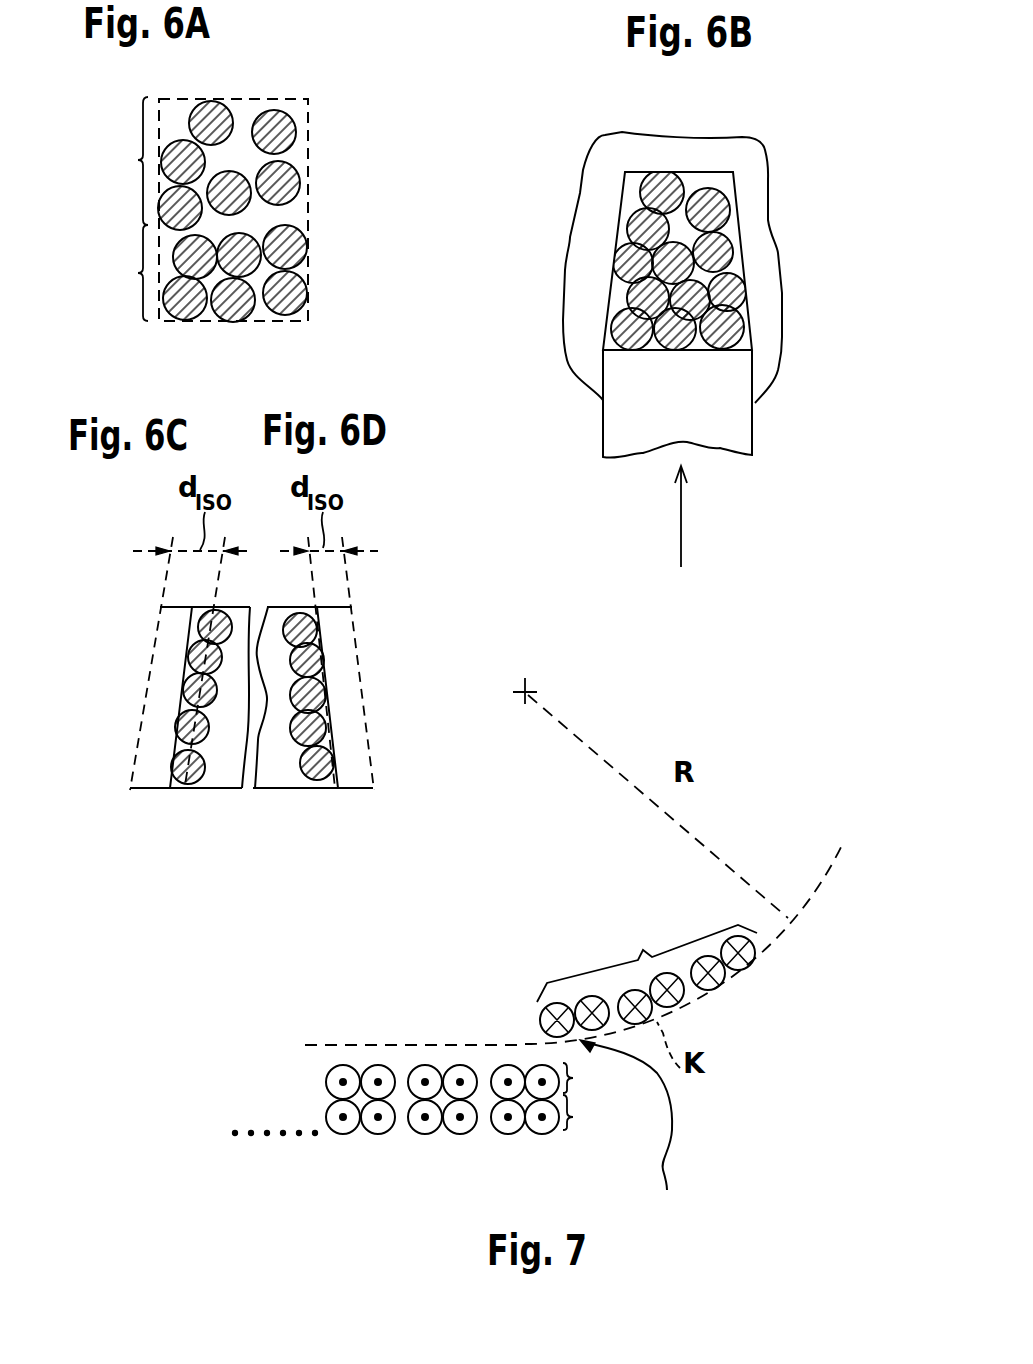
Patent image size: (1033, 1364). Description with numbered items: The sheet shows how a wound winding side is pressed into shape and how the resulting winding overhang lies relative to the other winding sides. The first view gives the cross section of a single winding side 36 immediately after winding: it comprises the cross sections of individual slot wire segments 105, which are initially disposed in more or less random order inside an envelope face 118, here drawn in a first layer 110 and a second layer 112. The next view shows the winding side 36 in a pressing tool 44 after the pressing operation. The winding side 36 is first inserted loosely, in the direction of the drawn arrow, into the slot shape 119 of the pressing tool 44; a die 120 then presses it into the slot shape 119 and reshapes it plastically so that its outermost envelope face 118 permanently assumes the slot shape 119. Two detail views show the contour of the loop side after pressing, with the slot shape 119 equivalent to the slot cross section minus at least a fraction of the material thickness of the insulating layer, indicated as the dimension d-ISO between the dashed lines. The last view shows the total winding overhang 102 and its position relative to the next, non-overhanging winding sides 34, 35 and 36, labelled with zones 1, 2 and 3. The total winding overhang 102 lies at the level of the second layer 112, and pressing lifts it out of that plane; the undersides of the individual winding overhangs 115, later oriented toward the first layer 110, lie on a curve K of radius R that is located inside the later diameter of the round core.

In FIG. 6A, the winding side 36 is at (225, 173).
In FIG. 6B, the winding side 36 is at (723, 208).
In FIG. 7, the winding side 36 is at (525, 1127).
In FIG. 6A, the slot wire segments 105 is at (258, 116).
In FIG. 6B, the slot wire segments 105 is at (710, 187).
In FIG. 6C, the slot wire segments 105 is at (180, 732).
In FIG. 6D, the slot wire segments 105 is at (310, 790).
In FIG. 6A, the envelope face 118 is at (312, 156).
In FIG. 6B, the envelope face 118 is at (737, 207).
In FIG. 6C, the envelope face 118 is at (167, 773).
In FIG. 6D, the envelope face 118 is at (342, 770).
In FIG. 6A, the second layer 112 is at (138, 161).
In FIG. 7, the second layer 112 is at (573, 1078).
In FIG. 6A, the first layer 110 is at (138, 274).
In FIG. 7, the first layer 110 is at (573, 1117).
In FIG. 6B, the slot shape 119 is at (620, 200).
In FIG. 6C, the slot shape 119 is at (143, 700).
In FIG. 6D, the slot shape 119 is at (363, 707).
In FIG. 6B, the pressing tool 44 is at (782, 163).
In FIG. 6B, the die 120 is at (718, 422).
In FIG. 7, the total winding overhang 102 is at (643, 950).
In FIG. 7, the individual winding overhangs 115 is at (637, 1131).
In FIG. 7, the conductor pair 34 is at (360, 1127).
In FIG. 7, the conductor pair 35 is at (442, 1127).
In FIG. 7, the straight region 1 is at (591, 1170).
In FIG. 7, the bending region 2 is at (693, 1147).
In FIG. 7, the outer region 3 is at (788, 1098).